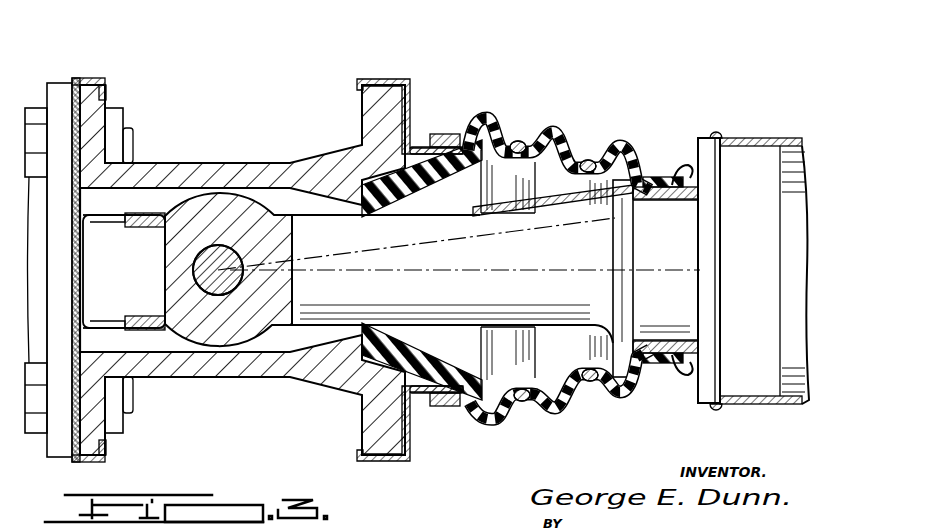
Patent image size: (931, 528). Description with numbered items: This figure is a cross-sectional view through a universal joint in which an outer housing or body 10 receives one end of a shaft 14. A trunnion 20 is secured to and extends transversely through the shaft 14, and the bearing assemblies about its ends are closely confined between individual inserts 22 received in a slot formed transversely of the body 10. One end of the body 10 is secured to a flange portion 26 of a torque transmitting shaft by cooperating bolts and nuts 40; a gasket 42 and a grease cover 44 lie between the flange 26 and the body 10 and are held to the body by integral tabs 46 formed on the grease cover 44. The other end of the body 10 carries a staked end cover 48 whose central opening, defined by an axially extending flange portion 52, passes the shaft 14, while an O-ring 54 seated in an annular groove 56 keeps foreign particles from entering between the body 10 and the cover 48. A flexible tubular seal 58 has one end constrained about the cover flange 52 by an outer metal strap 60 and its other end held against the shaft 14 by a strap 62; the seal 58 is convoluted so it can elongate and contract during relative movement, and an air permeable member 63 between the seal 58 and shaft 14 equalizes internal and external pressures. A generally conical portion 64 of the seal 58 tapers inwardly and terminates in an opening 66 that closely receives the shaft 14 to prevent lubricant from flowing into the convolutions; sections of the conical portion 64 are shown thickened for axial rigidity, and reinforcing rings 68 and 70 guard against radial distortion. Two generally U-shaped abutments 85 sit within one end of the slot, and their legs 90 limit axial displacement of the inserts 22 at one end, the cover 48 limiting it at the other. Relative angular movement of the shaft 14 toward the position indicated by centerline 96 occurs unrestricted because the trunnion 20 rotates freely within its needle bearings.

The outer housing or body 10 is at (303, 162).
The shaft 14 is at (512, 310).
The trunnion 20 is at (216, 256).
The inserts 22 is at (150, 234).
The flange portion 26 is at (48, 90).
The cooperating bolts and nuts 40 is at (122, 417).
The gasket 42 is at (88, 100).
The grease cover 44 is at (73, 88).
The integral tabs 46 is at (106, 84).
The end cover 48 is at (389, 74).
The flange portion 52 is at (420, 146).
The O-ring 54 is at (378, 456).
The annular groove 56 is at (363, 441).
The flexible tubular seal 58 is at (556, 130).
The outer metal strap 60 is at (460, 133).
The strap 62 is at (654, 178).
The air permeable member 63 is at (548, 210).
The conical portion 64 is at (430, 193).
The opening 66 is at (364, 216).
The reinforcing ring 68 is at (524, 140).
The reinforcing ring 70 is at (589, 160).
The U-shaped abutments 85 is at (87, 300).
The legs 90 is at (115, 213).
The centerline 96 is at (447, 247).